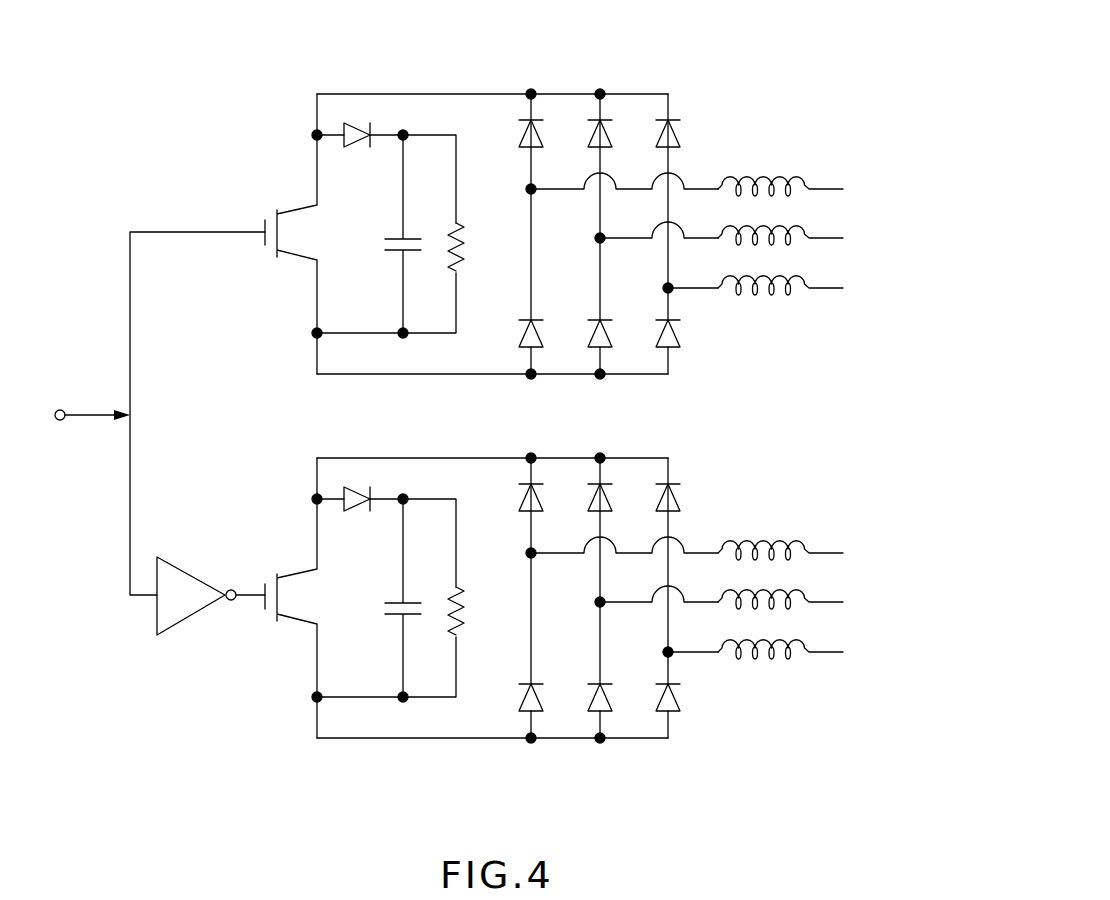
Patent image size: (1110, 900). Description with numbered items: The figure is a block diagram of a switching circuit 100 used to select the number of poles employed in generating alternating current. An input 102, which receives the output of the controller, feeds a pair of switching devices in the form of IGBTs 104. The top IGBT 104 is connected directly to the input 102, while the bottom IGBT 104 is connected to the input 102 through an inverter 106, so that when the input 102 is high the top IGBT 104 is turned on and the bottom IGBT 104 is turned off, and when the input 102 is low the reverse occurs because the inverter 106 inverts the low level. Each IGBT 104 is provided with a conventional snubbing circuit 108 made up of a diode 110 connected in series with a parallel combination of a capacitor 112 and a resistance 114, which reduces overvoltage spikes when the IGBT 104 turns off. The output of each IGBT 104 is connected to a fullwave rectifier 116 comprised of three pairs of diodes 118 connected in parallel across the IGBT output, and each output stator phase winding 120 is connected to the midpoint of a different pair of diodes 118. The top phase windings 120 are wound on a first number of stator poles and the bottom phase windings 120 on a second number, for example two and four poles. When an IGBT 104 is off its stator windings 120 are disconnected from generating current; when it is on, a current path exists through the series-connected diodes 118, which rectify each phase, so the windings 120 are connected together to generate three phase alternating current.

The switching circuit 100 is at (658, 36).
The input 102 is at (56, 408).
The IGBT 104 is at (300, 210).
The inverter 106 is at (182, 620).
The snubbing circuit 108 is at (336, 304).
The diode 110 is at (362, 121).
The capacitor 112 is at (393, 236).
The resistance 114 is at (467, 238).
The fullwave rectifier 116 is at (713, 339).
The diodes 118 is at (676, 140).
The stator phase winding 120 is at (766, 150).